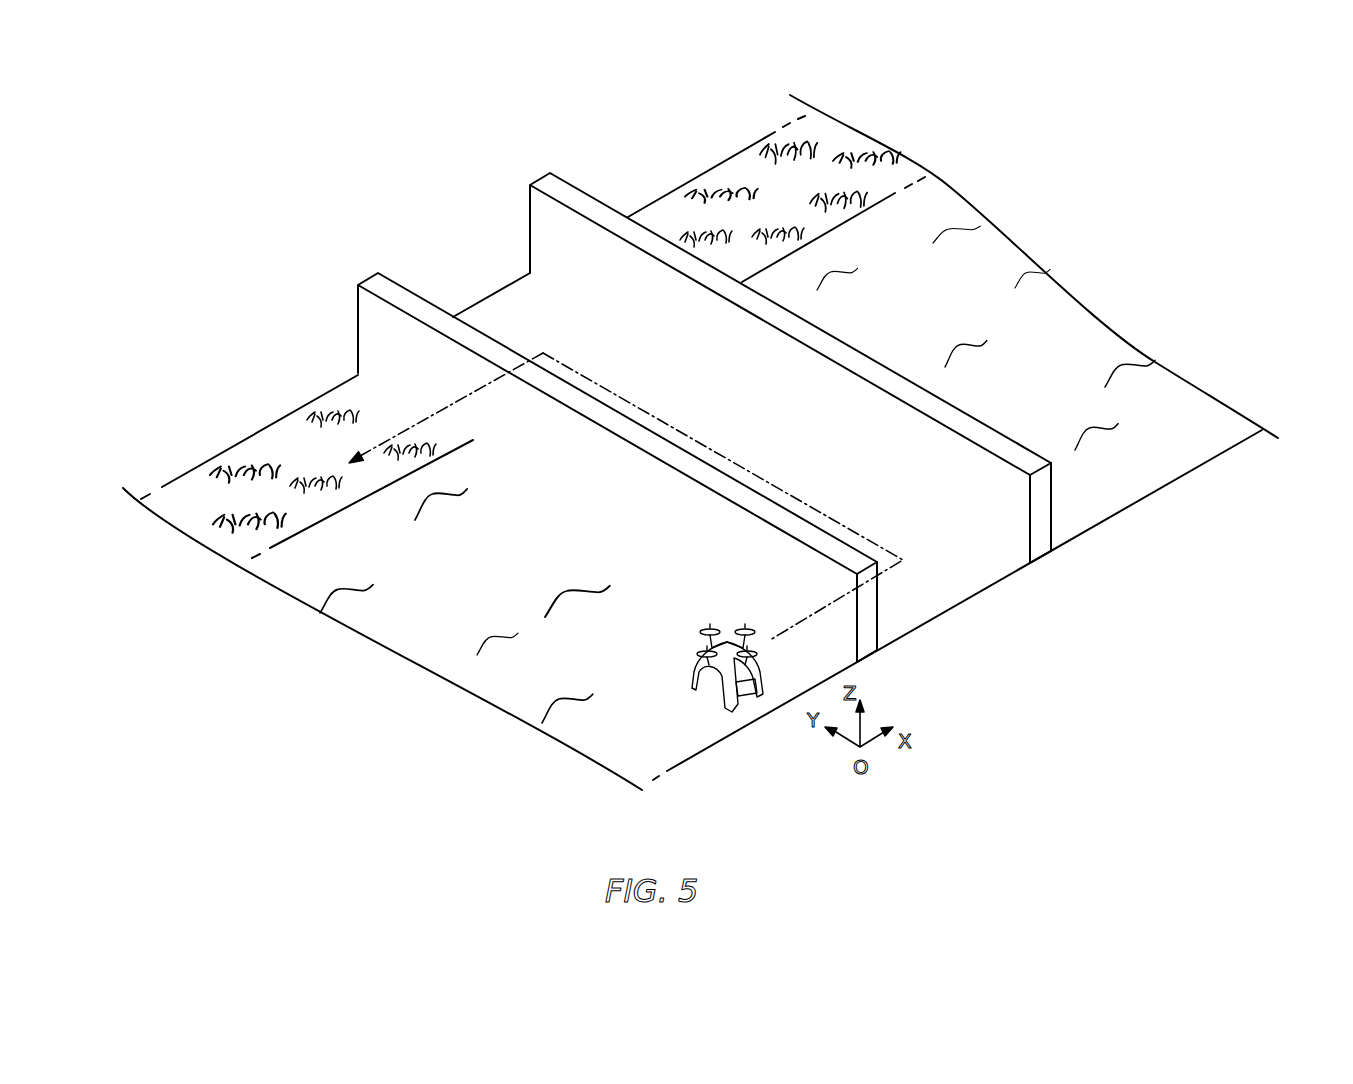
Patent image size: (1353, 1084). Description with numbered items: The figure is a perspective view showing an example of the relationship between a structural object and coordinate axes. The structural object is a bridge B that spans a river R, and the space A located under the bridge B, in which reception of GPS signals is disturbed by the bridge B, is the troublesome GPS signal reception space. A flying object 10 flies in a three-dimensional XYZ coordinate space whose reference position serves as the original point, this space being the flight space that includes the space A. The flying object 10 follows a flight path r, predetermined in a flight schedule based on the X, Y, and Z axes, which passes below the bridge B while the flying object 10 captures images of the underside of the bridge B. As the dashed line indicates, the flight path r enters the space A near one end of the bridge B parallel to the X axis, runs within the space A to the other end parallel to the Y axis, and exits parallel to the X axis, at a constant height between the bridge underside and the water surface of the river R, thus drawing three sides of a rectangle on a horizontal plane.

The flying object 10 is at (750, 698).
The troublesome GPS signal reception space A is at (558, 507).
The bridge B is at (489, 318).
The river R is at (840, 258).
The flight path r is at (592, 378).